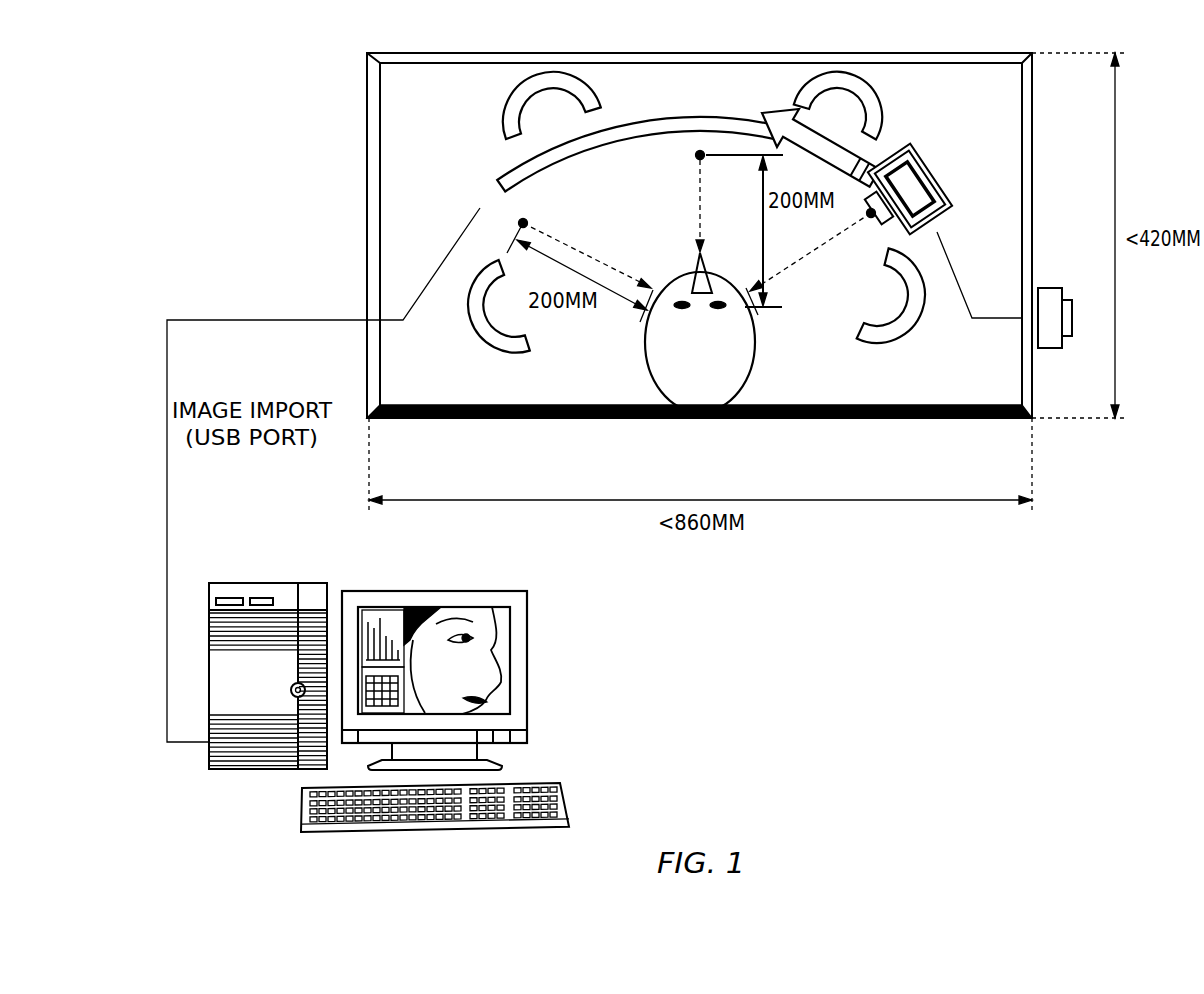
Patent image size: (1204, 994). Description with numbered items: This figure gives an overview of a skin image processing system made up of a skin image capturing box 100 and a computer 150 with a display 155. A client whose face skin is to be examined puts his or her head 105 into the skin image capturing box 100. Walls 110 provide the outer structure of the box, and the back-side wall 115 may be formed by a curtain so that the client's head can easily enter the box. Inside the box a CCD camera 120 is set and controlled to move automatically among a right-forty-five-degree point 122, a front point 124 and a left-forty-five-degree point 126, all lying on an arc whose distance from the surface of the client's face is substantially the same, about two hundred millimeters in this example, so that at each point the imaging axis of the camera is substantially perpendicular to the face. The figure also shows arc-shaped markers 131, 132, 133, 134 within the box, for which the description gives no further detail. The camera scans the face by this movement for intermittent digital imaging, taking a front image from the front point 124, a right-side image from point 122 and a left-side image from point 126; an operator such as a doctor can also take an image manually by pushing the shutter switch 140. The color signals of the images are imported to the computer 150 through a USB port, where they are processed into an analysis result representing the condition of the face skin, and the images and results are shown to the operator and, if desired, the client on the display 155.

The skin image capturing box 100 is at (412, 44).
The head 105 is at (754, 366).
The walls 110 is at (948, 53).
The back-side wall 115 is at (946, 420).
The CCD camera 120 is at (938, 168).
The right-45-degree point 122 is at (869, 218).
The front point 124 is at (695, 156).
The left-45-degree point 126 is at (528, 222).
The right arc marker 131 is at (888, 350).
The upper right arc marker 132 is at (887, 103).
The upper left arc marker 133 is at (507, 108).
The left arc marker 134 is at (484, 351).
The shutter switch 140 is at (1050, 288).
The computer 150 is at (268, 582).
The display 155 is at (445, 590).